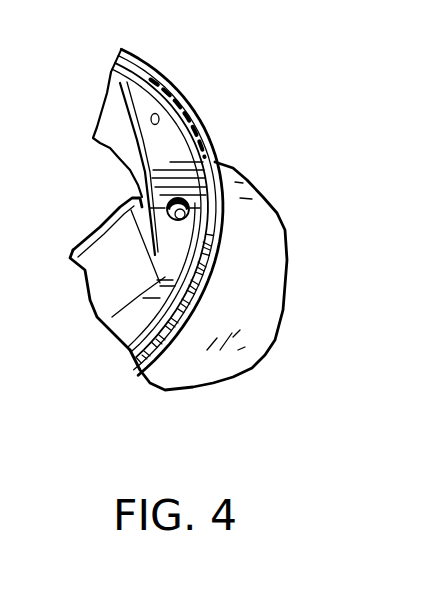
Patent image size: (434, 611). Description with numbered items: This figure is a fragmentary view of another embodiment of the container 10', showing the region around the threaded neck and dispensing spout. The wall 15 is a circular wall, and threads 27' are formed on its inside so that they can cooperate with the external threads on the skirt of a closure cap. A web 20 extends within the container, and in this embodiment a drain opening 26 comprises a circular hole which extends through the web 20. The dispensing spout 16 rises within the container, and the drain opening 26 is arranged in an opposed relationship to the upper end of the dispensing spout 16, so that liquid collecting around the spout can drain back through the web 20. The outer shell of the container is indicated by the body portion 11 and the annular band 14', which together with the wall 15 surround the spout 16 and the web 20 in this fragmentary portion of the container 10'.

The container 10' is at (218, 287).
The body portion 11 is at (258, 299).
The annular ring band 14' is at (203, 196).
The circular wall 15 is at (205, 131).
The dispensing spout 16 is at (122, 278).
The web 20 is at (155, 332).
The drain opening 26 is at (177, 221).
The threads 27' is at (222, 89).